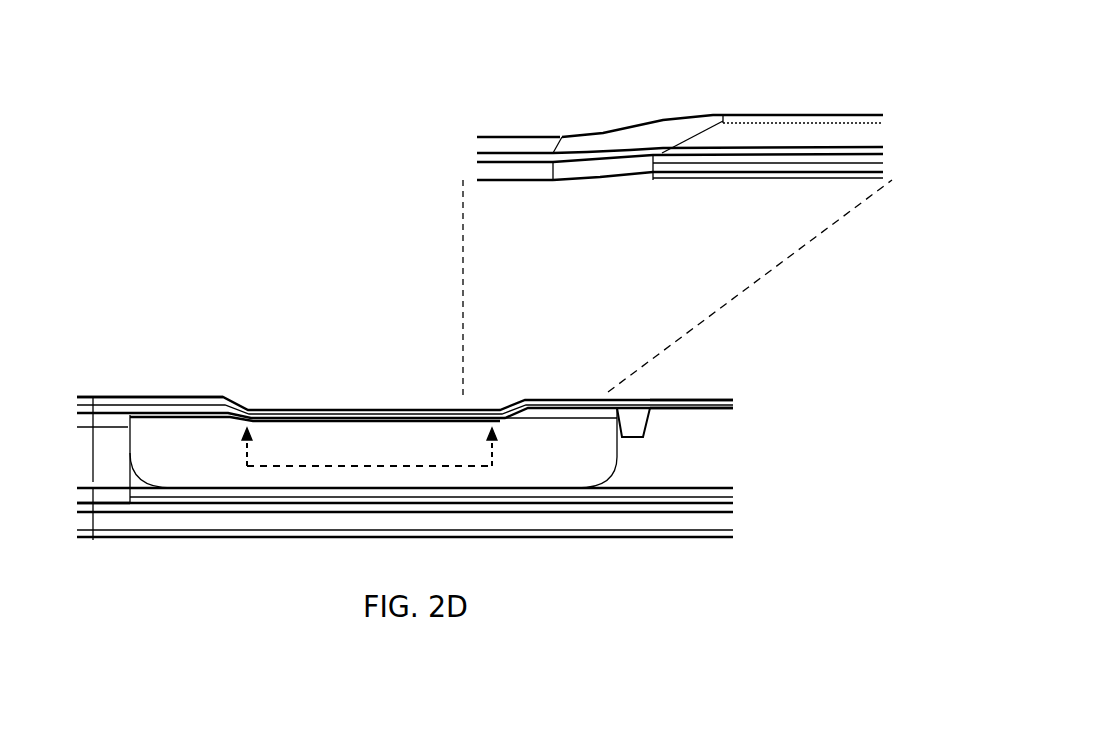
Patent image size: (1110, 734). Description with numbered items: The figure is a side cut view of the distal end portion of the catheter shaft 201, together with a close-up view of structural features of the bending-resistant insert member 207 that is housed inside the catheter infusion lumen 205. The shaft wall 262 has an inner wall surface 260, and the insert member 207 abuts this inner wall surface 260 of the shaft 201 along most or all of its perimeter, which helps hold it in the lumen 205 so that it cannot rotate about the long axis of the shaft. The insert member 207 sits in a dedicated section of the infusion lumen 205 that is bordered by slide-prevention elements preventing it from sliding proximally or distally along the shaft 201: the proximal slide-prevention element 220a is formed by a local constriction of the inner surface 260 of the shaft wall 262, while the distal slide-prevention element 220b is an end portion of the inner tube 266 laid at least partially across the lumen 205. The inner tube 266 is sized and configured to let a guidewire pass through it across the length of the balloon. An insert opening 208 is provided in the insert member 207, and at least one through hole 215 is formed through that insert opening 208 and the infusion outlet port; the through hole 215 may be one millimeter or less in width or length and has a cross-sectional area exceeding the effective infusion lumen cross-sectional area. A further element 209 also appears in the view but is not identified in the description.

The shaft 201 is at (137, 397).
The infusion lumen 205 is at (715, 467).
The bending-resistant insert member 207 is at (617, 457).
The insert opening 208 is at (493, 178).
The top waveguide layer 209 is at (367, 388).
The through hole 215 is at (369, 450).
The proximal slide-prevention element 220a is at (650, 418).
The distal slide-prevention element 220b is at (125, 415).
The inner wall surface 260 is at (846, 146).
The shaft wall 262 is at (761, 123).
The inner tube 266 is at (103, 497).